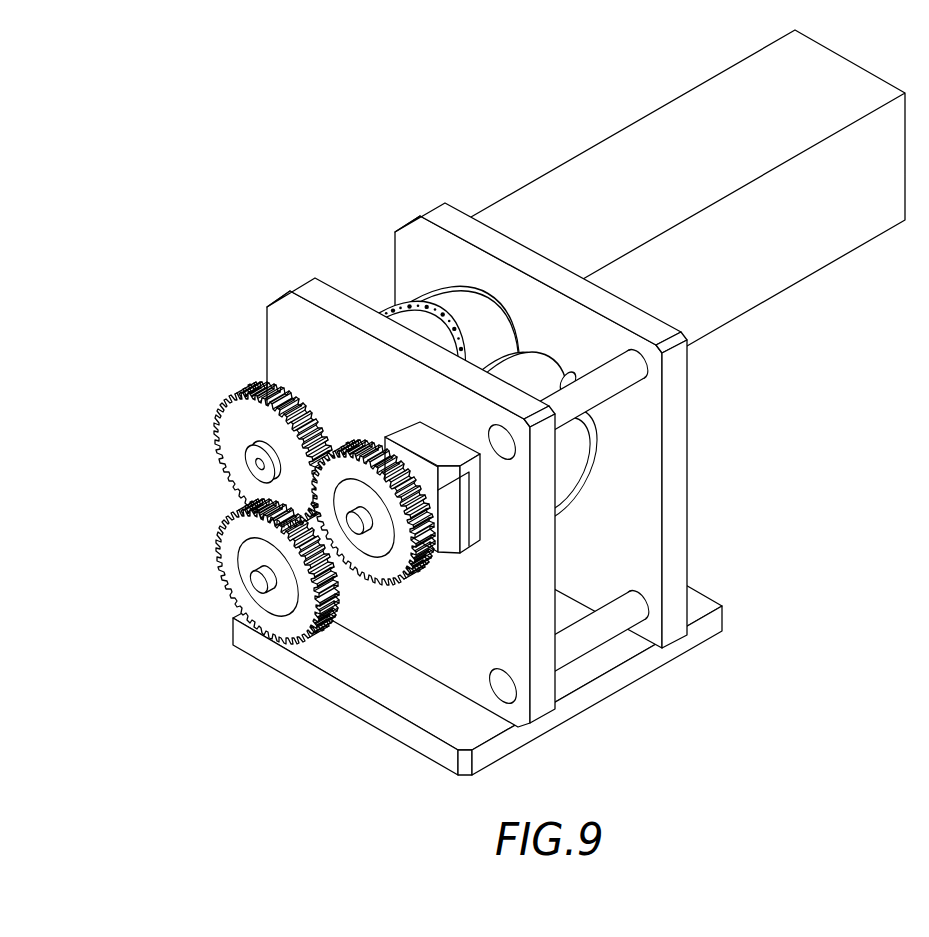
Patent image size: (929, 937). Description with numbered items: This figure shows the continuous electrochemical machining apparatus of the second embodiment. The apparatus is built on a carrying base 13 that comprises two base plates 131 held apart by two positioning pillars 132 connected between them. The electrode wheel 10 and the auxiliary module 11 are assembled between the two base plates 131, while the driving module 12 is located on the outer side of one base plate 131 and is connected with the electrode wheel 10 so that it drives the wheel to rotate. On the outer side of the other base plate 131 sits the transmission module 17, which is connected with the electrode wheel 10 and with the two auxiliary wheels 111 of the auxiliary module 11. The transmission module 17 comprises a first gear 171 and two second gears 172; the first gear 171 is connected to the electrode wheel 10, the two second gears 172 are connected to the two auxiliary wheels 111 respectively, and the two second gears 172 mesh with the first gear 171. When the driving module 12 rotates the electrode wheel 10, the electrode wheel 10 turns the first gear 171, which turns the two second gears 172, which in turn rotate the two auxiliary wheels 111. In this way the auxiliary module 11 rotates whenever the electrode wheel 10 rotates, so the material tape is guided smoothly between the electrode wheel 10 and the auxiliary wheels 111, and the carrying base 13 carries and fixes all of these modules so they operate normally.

The electrode wheel 10 is at (382, 284).
The auxiliary module 11 is at (530, 425).
The auxiliary wheel 111 is at (598, 477).
The driving module 12 is at (797, 283).
The carrying base 13 is at (429, 470).
The base plate 131 is at (478, 465).
The positioning pillar 132 is at (610, 381).
The transmission module 17 is at (357, 537).
The first gear 171 is at (217, 432).
The second gear 172 is at (222, 547).